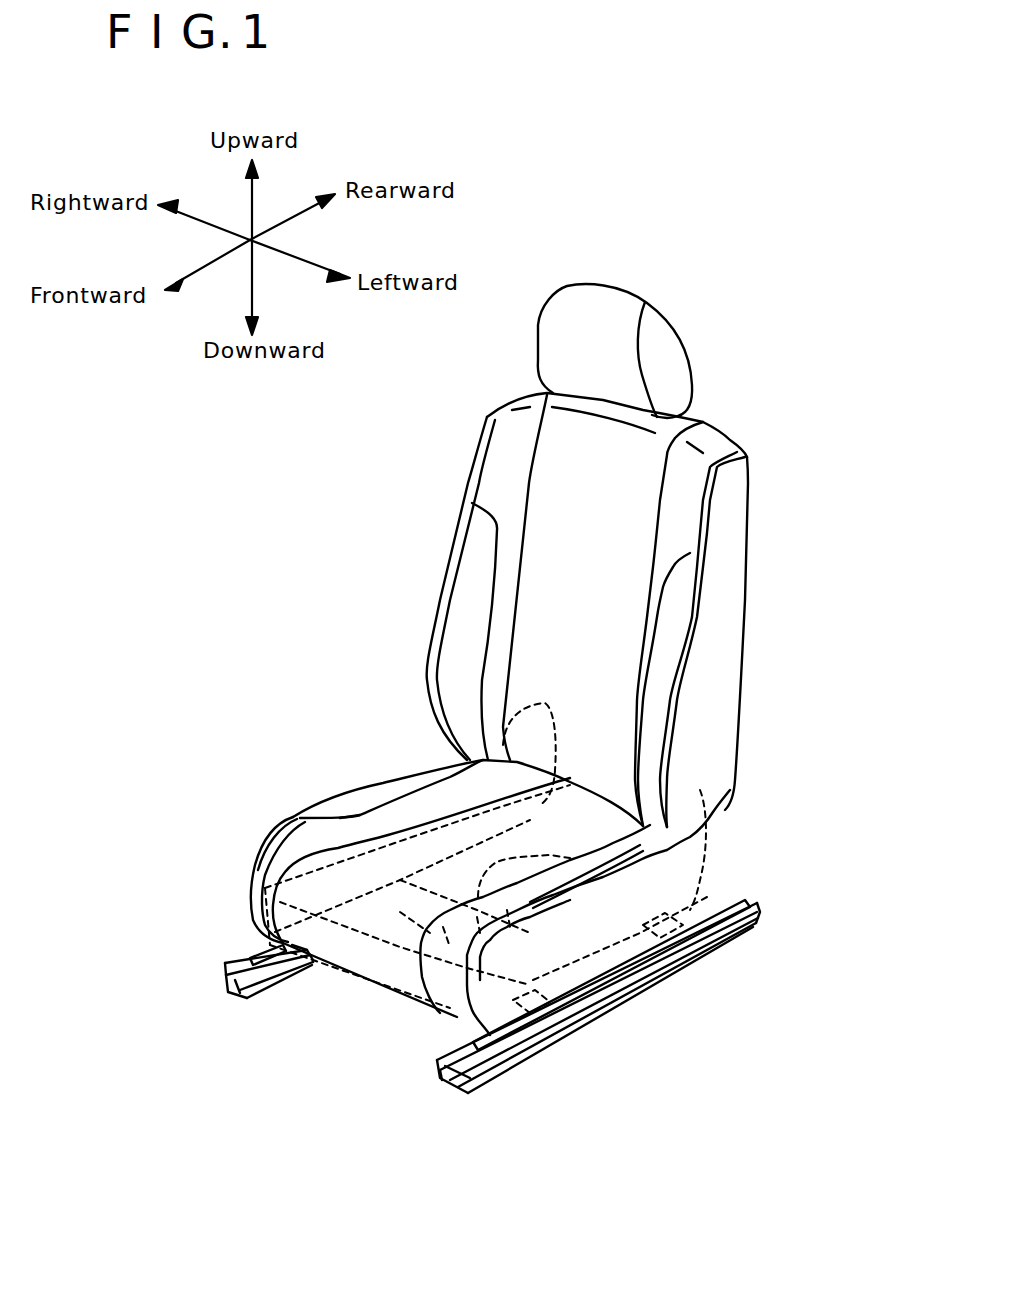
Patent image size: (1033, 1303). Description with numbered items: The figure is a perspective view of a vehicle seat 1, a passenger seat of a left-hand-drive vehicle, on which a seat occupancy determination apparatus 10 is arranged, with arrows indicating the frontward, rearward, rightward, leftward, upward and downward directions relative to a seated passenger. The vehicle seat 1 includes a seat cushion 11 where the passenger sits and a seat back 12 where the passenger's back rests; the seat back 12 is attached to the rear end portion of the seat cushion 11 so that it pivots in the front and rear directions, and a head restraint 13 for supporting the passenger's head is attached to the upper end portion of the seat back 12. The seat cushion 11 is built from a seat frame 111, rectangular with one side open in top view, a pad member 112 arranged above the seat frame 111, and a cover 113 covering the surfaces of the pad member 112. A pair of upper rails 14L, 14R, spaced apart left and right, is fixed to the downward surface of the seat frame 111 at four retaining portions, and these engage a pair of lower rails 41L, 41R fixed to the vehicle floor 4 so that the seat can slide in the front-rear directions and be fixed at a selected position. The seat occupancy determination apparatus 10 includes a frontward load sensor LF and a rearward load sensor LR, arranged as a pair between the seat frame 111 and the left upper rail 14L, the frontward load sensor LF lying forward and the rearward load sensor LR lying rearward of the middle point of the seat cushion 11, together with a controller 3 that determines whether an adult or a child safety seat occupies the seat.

The vehicle seat 1 is at (827, 442).
The controller 3 is at (743, 845).
The vehicle floor 4 is at (336, 1183).
The seat occupancy determination apparatus 10 is at (685, 983).
The seat cushion 11 is at (345, 962).
The seat back 12 is at (733, 570).
The head restraint 13 is at (667, 346).
The upper rail 14L is at (495, 1030).
The upper rail 14R is at (268, 955).
The lower rail 41L is at (535, 1032).
The lower rail 41R is at (283, 941).
The seat frame 111 is at (628, 990).
The pad member 112 is at (360, 803).
The cover 113 is at (298, 820).
The rearward load sensor LR is at (708, 950).
The frontward load sensor LF is at (583, 1027).